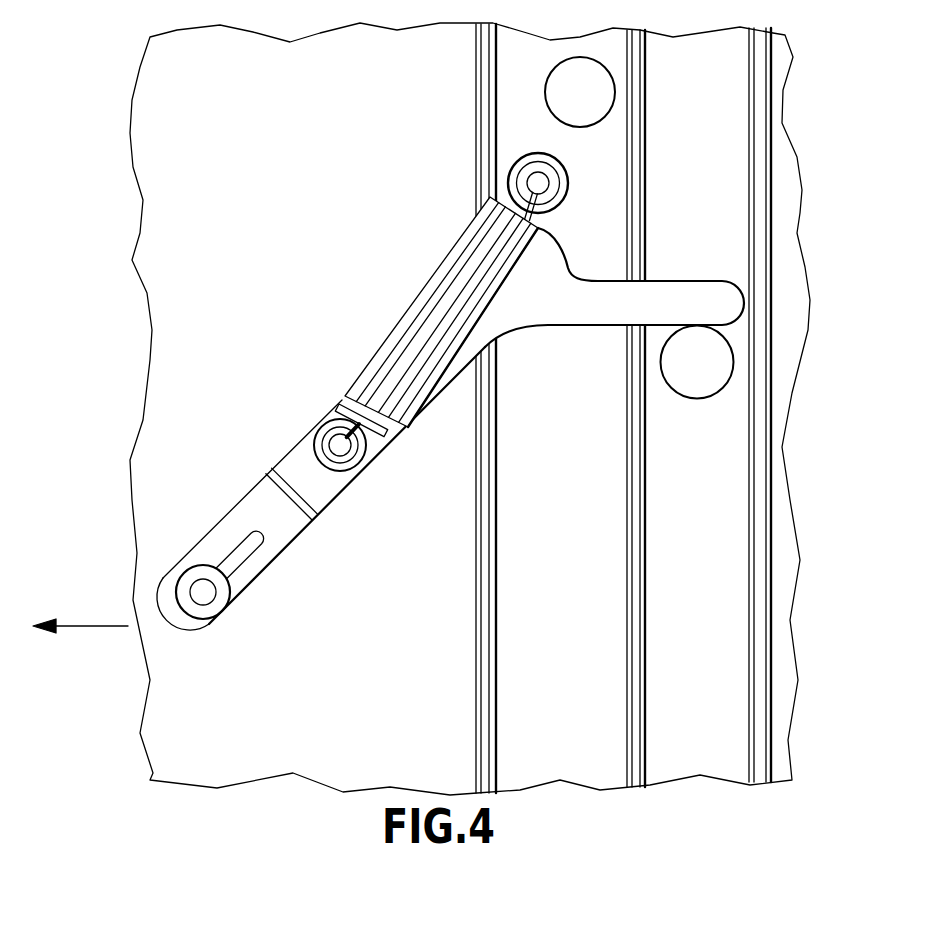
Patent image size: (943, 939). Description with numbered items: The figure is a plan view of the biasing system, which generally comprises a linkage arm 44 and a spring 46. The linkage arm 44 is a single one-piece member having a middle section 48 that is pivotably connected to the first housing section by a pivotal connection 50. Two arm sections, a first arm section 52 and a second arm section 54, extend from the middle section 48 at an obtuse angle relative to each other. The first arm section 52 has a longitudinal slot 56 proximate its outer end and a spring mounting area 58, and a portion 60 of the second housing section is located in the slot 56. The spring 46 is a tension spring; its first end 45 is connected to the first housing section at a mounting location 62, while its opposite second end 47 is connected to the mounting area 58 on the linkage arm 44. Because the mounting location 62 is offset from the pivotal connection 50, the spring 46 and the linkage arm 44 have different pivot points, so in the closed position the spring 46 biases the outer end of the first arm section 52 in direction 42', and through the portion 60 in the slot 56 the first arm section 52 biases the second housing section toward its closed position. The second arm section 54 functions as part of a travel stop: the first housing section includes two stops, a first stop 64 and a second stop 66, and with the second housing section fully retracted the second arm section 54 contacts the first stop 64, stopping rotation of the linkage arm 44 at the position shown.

The direction 42' is at (80, 645).
The linkage arm 44 is at (278, 462).
The first end of the spring 45 is at (516, 191).
The spring 46 is at (410, 308).
The second end of the spring 47 is at (340, 443).
The middle section 48 is at (556, 247).
The pivotal connection 50 is at (541, 266).
The first arm section 52 is at (212, 528).
The second arm section 54 is at (682, 280).
The longitudinal slot 56 is at (228, 560).
The spring mounting area 58 is at (328, 434).
The portion of the second housing section 60 is at (205, 594).
The mounting location 62 is at (537, 182).
The first stop 64 is at (702, 373).
The second stop 66 is at (587, 66).